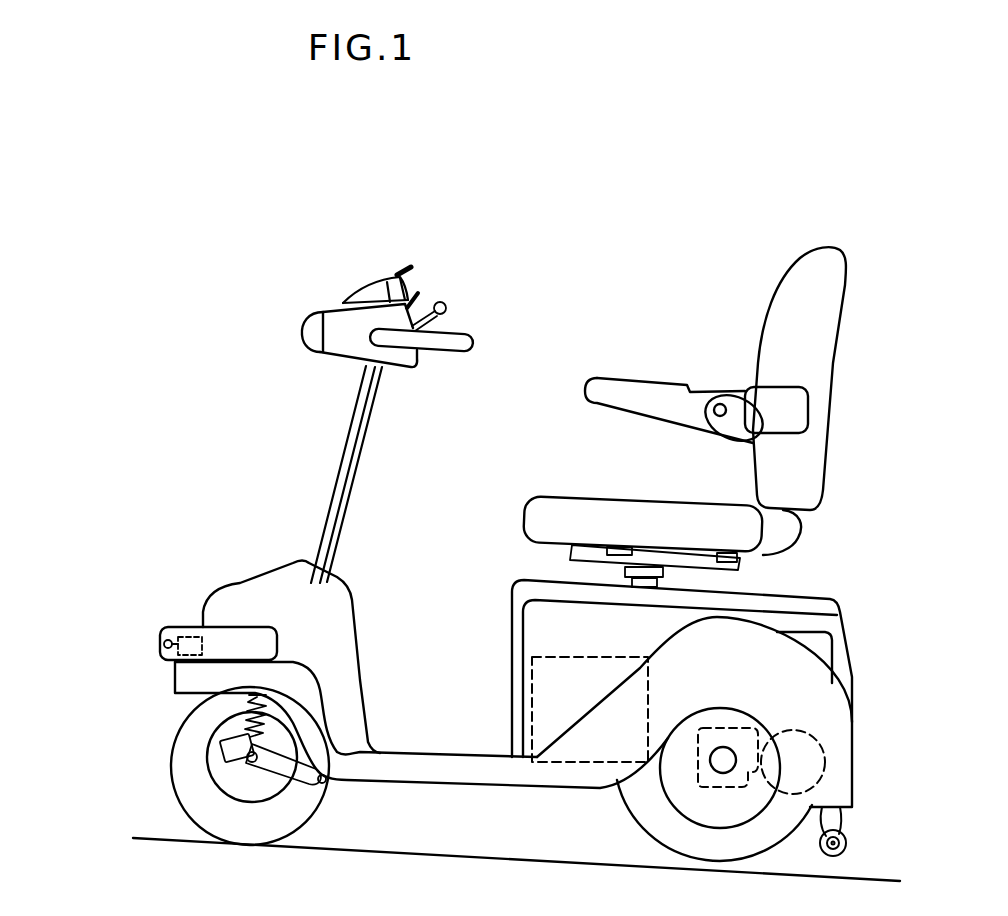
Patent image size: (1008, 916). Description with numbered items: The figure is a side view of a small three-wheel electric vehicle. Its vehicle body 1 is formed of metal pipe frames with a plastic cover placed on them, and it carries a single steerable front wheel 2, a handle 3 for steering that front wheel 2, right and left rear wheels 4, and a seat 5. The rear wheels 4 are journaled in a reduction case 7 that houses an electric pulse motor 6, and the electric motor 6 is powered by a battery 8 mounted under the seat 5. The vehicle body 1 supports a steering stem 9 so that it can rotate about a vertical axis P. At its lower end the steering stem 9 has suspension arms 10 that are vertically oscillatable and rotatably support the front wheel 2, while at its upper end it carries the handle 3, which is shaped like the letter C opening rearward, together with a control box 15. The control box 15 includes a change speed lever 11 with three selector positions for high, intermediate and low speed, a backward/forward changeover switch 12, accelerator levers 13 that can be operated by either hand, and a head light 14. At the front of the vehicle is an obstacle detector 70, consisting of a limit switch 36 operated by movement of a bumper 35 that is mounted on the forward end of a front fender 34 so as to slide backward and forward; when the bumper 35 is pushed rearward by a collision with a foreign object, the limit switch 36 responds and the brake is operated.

The vehicle body 1 is at (441, 785).
The front wheel 2 is at (182, 788).
The handle 3 is at (467, 355).
The rear wheels 4 is at (633, 823).
The seat 5 is at (562, 497).
The electric pulse motor 6 is at (813, 763).
The reduction case 7 is at (725, 727).
The battery 8 is at (530, 677).
The steering stem 9 is at (340, 463).
The suspension arms 10 is at (270, 763).
The change speed lever 11 is at (412, 268).
The backward/forward changeover switch 12 is at (420, 297).
The accelerator levers 13 is at (447, 305).
The head light 14 is at (300, 338).
The control box 15 is at (330, 307).
The front fender 34 is at (242, 583).
The bumper 35 is at (166, 652).
The limit switch 36 is at (193, 633).
The obstacle detector 70 is at (153, 623).
The vertical axis P is at (356, 436).